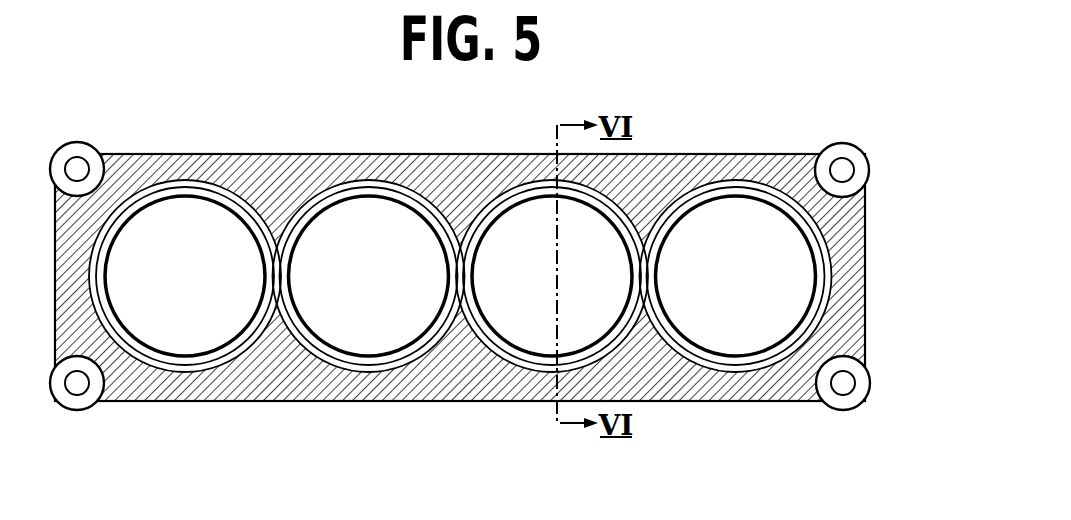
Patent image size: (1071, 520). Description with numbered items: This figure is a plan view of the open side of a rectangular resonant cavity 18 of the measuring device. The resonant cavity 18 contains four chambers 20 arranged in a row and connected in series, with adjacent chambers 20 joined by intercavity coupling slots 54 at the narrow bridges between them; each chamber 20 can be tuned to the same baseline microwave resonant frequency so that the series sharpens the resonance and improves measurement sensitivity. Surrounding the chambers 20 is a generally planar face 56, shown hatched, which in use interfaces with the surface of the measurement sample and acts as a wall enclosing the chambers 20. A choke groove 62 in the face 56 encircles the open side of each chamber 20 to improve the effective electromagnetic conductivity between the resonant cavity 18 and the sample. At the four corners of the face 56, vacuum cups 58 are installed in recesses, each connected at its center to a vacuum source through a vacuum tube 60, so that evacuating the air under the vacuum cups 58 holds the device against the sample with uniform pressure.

The resonant cavity 18 is at (279, 418).
The chamber 20 is at (173, 298).
The intercavity coupling slot 54 is at (260, 270).
The face 56 is at (457, 372).
The vacuum cup 58 is at (64, 144).
The vacuum tube 60 is at (86, 160).
The choke groove 62 is at (214, 182).